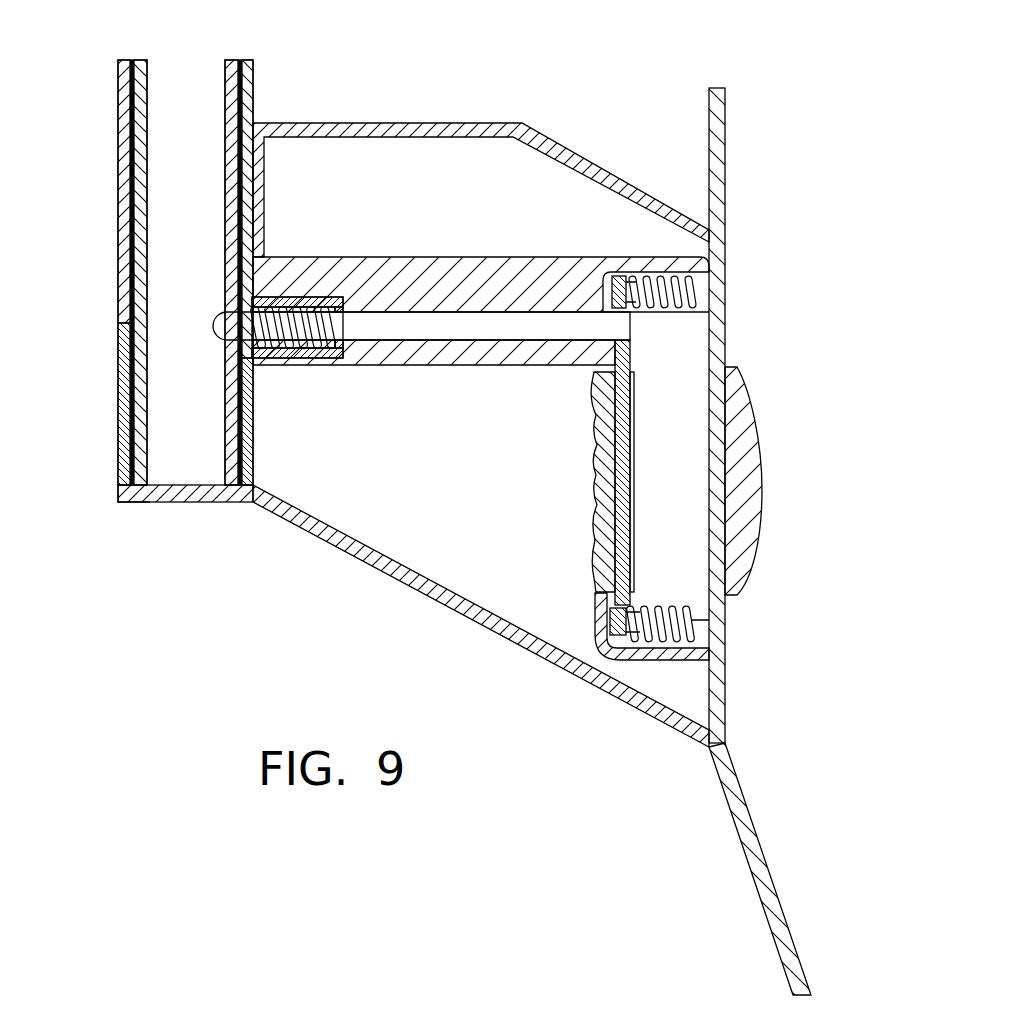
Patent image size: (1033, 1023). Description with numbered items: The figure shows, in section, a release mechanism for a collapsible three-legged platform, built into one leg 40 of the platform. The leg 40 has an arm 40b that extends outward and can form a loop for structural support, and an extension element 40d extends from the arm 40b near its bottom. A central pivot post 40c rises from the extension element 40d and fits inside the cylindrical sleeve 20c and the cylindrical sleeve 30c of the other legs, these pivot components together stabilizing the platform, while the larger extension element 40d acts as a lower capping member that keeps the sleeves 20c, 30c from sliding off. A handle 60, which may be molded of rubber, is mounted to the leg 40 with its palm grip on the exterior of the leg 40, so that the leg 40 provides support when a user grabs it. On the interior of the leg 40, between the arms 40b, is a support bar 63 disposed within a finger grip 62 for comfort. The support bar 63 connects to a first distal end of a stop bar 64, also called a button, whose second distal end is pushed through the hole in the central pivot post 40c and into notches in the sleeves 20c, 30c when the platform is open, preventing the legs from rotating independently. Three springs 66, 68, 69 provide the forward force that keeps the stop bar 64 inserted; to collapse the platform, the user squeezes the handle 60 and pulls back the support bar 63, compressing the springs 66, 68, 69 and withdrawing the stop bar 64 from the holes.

The leg 40 is at (750, 203).
The arm 40b is at (419, 122).
The central pivot post 40c is at (148, 468).
The extension element 40d is at (148, 500).
The cylindrical sleeve 30c is at (98, 272).
The cylindrical sleeve 20c is at (118, 392).
The spring 66 is at (307, 303).
The stop bar 64 is at (435, 328).
The spring 69 is at (695, 292).
The finger grip 62 is at (590, 403).
The support bar 63 is at (618, 450).
The handle 60 is at (745, 535).
The spring 68 is at (700, 620).